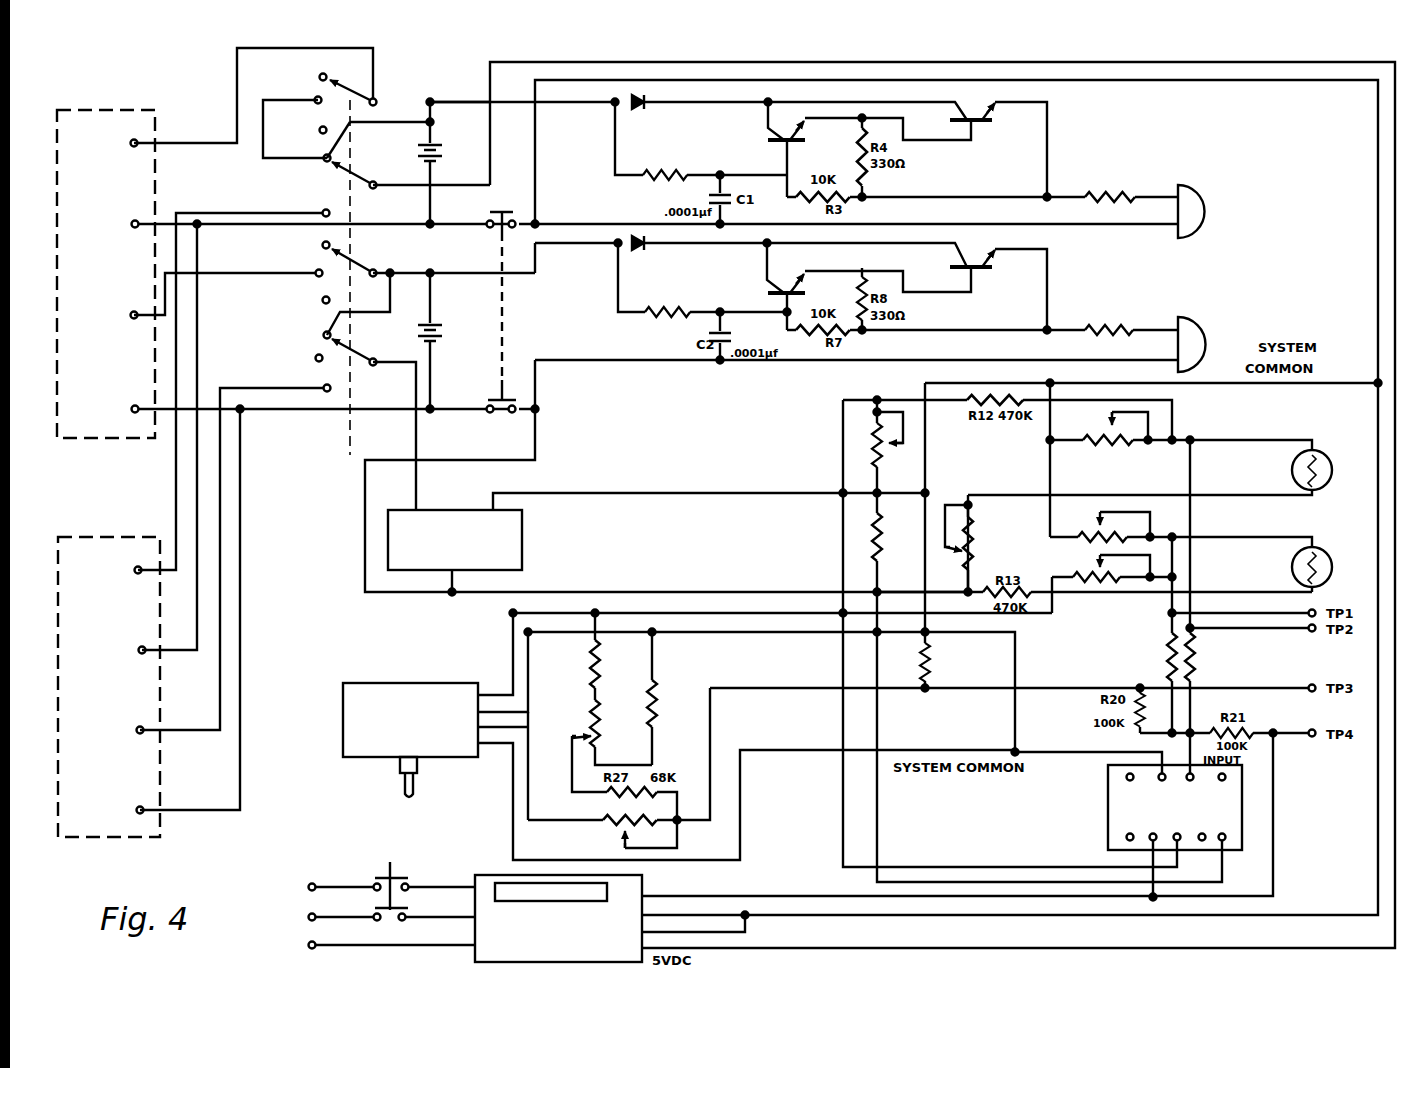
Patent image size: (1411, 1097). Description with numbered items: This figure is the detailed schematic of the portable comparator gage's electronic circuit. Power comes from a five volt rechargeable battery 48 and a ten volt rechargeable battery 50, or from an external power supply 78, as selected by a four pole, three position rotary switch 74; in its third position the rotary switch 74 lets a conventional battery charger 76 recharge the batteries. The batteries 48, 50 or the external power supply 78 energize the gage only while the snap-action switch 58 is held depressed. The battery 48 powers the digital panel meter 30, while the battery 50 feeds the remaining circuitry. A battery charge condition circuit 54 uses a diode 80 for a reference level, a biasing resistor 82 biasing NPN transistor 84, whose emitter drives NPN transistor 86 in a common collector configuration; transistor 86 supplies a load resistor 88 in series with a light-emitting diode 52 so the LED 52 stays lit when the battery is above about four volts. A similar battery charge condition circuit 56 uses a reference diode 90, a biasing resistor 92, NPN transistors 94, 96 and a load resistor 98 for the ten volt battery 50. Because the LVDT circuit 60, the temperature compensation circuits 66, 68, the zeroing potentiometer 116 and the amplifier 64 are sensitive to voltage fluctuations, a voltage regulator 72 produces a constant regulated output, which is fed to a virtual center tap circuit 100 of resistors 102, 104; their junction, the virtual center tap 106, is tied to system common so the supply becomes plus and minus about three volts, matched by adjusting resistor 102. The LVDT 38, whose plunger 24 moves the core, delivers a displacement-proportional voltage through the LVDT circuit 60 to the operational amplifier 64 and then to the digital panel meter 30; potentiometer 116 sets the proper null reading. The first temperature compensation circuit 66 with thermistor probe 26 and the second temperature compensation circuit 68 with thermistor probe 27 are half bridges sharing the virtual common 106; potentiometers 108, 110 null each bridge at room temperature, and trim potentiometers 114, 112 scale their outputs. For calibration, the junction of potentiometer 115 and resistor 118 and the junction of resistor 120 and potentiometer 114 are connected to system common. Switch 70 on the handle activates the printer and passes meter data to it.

The plunger 24 is at (411, 798).
The thermistor probe 26 is at (1331, 461).
The thermistor probe 27 is at (1327, 548).
The digital panel meter 30 is at (487, 875).
The linear variable displacement transducer (LVDT) 38 is at (338, 765).
The 5 volt rechargeable battery 48 is at (446, 158).
The 10 volt rechargeable battery 50 is at (446, 335).
The light-emitting diode 52 is at (1205, 200).
The battery charge condition circuit 54 is at (850, 104).
The battery charge condition circuit 56 is at (878, 268).
The snap-action switch 58 is at (500, 414).
The LVDT circuit 60 is at (502, 787).
The operational amplifier 64 is at (1108, 818).
The first temperature compensation circuit 66 is at (1194, 430).
The second temperature compensation circuit 68 is at (1182, 546).
The switch 70 is at (386, 864).
The voltage regulator 72 is at (522, 548).
The rotary switch 74 is at (357, 378).
The battery charger 76 is at (162, 126).
The external power supply 78 is at (146, 837).
The diode 80 is at (649, 97).
The biasing resistor 82 is at (668, 177).
The NPN transistor 84 is at (766, 137).
The NPN transistor 86 is at (986, 122).
The load resistor 88 is at (1112, 196).
The reference diode 90 is at (640, 251).
The biasing resistor 92 is at (673, 311).
The NPN transistor 94 is at (766, 288).
The NPN transistor 96 is at (986, 268).
The load resistor 98 is at (1106, 328).
The virtual center tap circuit 100 is at (936, 435).
The resistor 102 is at (890, 450).
The resistor 104 is at (870, 545).
The virtual center tap 106 is at (922, 491).
The potentiometer 108 is at (965, 556).
The potentiometer 110 is at (1097, 572).
The trim potentiometer 112 is at (1096, 534).
The trim potentiometer 114 is at (1120, 446).
The potentiometer 115 is at (612, 828).
The potentiometer 116 is at (598, 742).
The resistor 118 is at (921, 642).
The resistor 120 is at (1196, 666).